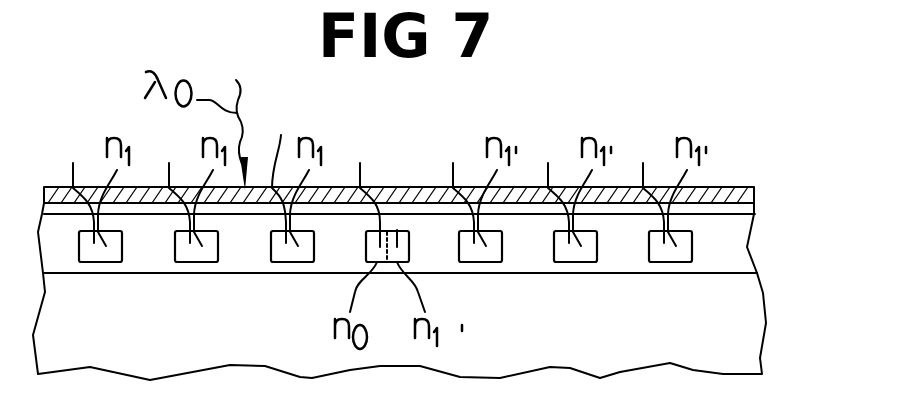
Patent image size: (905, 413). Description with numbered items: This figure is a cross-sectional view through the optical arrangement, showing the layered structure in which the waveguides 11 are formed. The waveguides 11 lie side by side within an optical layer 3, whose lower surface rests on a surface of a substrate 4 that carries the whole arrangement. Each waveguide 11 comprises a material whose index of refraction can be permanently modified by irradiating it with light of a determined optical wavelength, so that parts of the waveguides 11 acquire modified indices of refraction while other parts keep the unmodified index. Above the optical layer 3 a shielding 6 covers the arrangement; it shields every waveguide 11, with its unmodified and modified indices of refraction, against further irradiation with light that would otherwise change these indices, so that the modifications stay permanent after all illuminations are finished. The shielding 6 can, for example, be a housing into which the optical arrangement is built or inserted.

The waveguide 11 is at (62, 134).
The shielding 6 is at (756, 186).
The optical layer 3 is at (737, 253).
The substrate 4 is at (748, 334).